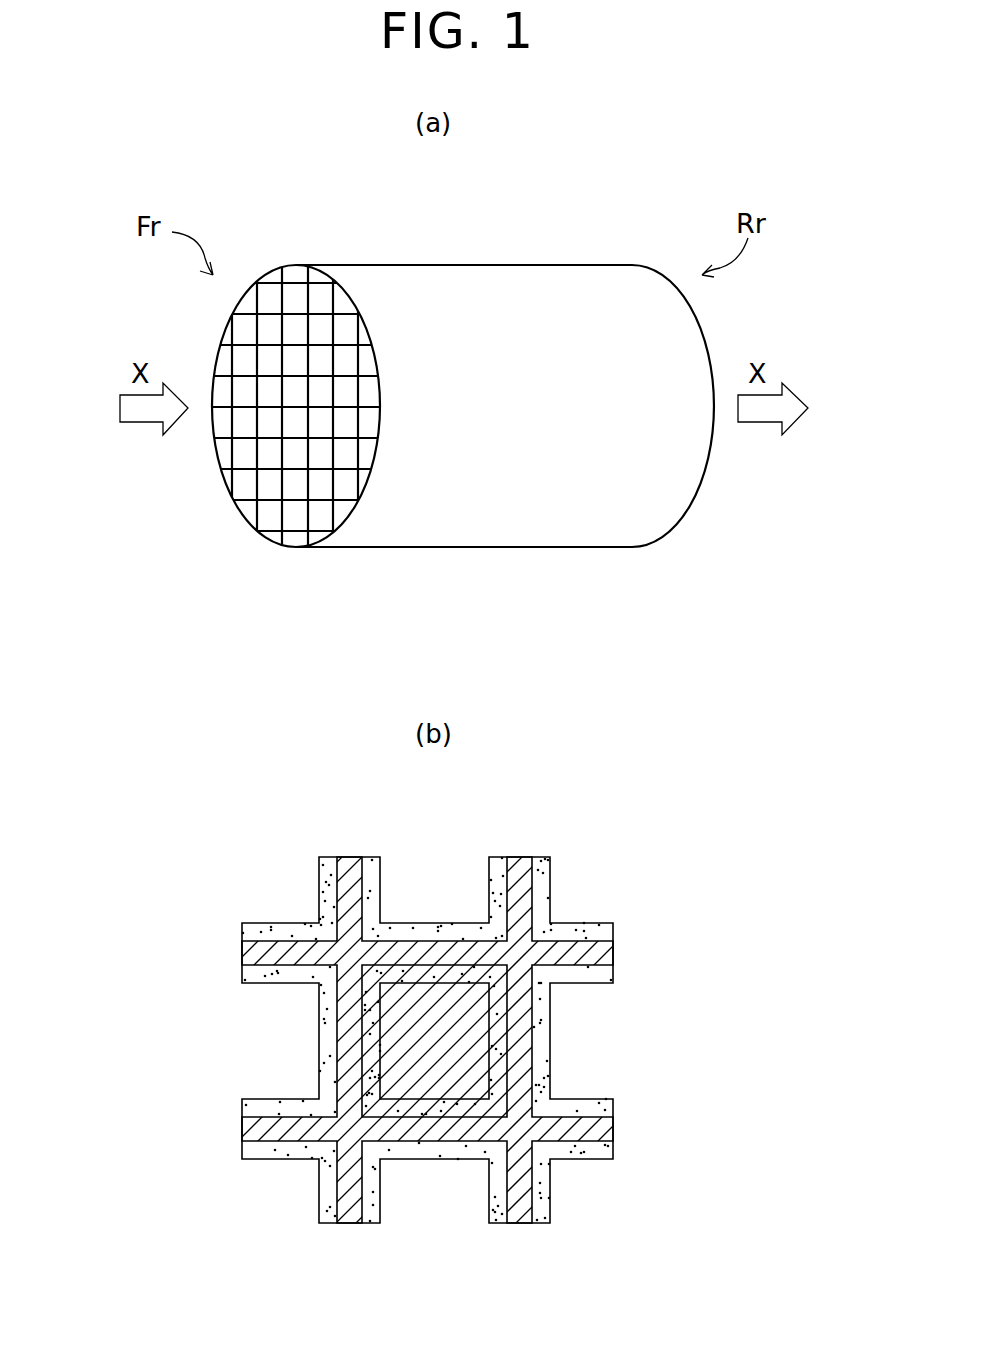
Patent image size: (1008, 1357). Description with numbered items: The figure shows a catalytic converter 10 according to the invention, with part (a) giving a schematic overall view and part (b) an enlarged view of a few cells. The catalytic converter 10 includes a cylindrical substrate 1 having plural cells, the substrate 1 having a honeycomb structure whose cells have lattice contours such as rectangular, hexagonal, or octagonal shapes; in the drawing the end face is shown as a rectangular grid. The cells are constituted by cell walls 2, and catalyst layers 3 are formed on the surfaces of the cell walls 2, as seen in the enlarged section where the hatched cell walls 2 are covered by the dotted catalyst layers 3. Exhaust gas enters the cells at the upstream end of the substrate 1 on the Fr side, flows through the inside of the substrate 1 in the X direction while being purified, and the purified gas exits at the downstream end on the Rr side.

The substrate 1 is at (504, 272).
The cell walls 2 is at (253, 481).
The catalyst layers 3 is at (368, 862).
The catalytic converter 10 is at (444, 715).